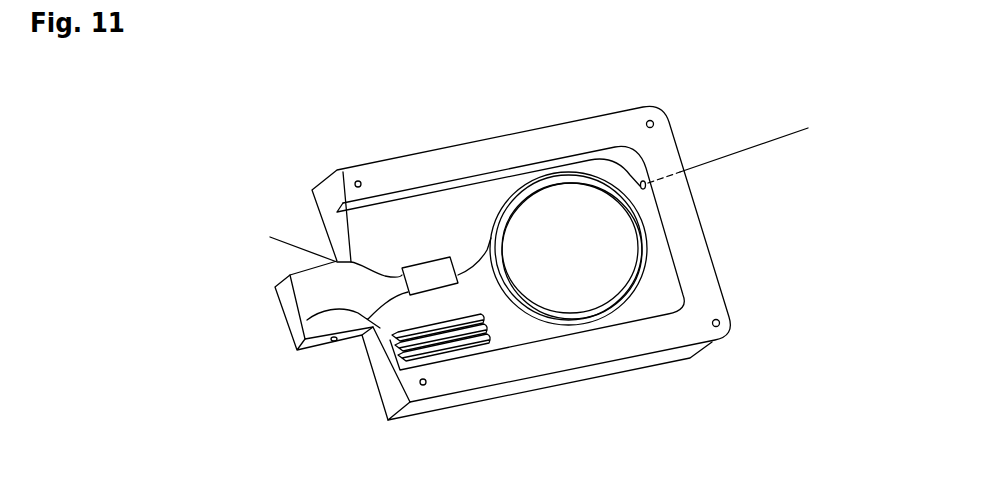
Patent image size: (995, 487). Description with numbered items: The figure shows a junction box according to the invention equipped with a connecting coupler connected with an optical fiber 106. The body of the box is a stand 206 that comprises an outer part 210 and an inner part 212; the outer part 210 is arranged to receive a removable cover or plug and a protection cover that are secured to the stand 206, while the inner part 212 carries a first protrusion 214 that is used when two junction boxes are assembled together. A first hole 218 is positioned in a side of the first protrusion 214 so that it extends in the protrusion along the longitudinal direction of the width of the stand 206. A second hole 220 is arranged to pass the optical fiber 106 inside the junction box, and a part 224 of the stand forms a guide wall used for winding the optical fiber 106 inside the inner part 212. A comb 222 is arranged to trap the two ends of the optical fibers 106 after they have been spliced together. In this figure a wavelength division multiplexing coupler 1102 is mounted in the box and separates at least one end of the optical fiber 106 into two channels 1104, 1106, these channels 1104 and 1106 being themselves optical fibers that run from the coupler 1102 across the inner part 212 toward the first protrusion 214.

The optical fiber 106 is at (758, 146).
The stand 206 is at (704, 280).
The outer part 210 is at (578, 263).
The inner part 212 is at (398, 220).
The first protrusion 214 is at (310, 288).
The first hole 218 is at (334, 343).
The second hole 220 is at (642, 181).
The comb 222 is at (443, 335).
The guide wall part 224 is at (557, 217).
The wavelength division multiplexing coupler 1102 is at (430, 275).
The channel 1104 is at (292, 244).
The channel 1106 is at (307, 321).